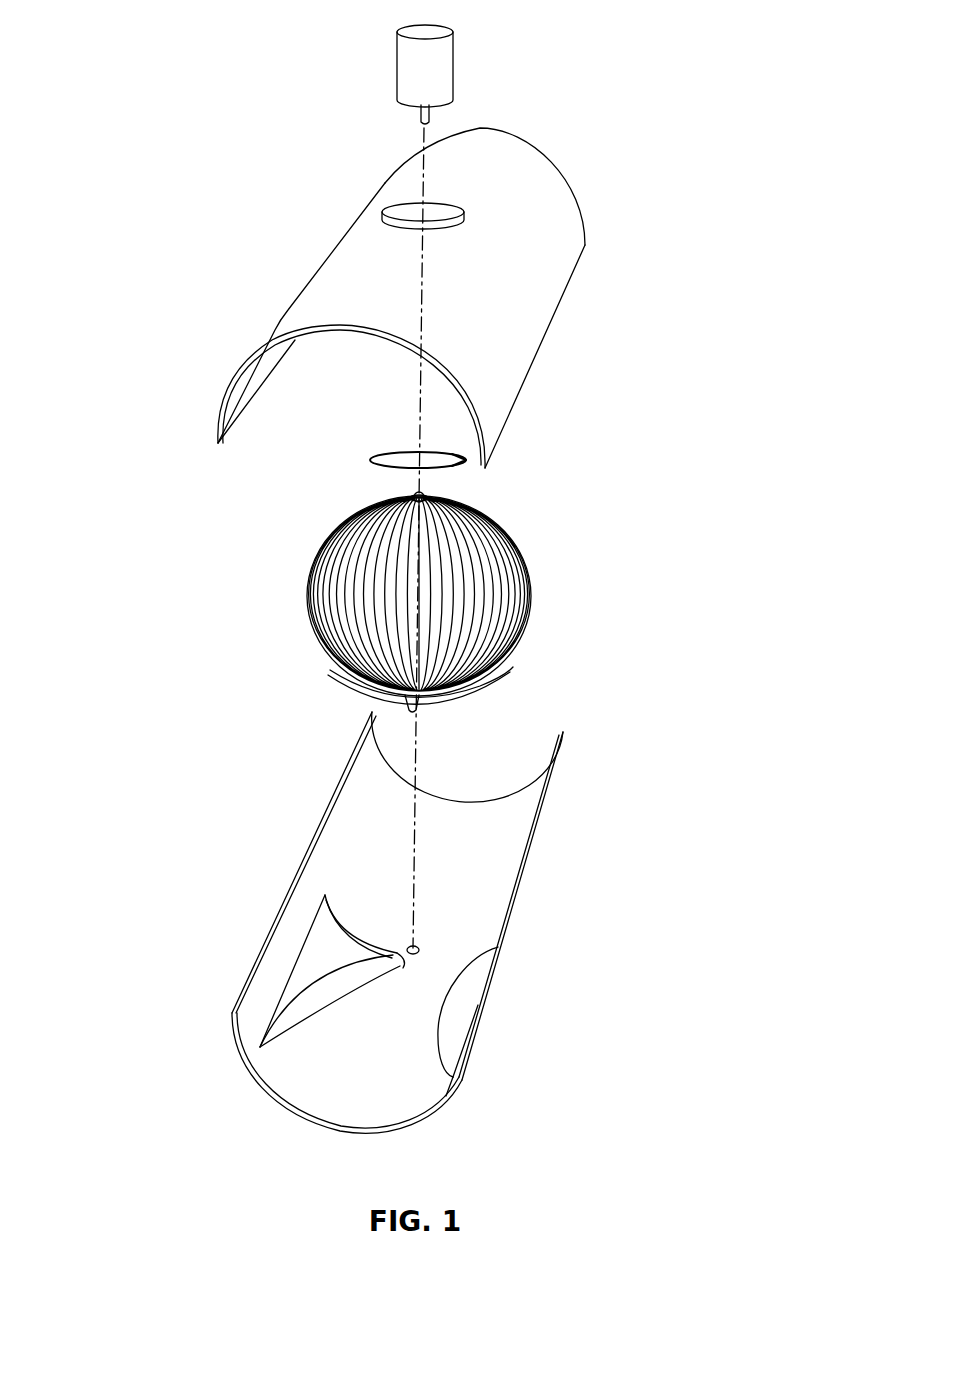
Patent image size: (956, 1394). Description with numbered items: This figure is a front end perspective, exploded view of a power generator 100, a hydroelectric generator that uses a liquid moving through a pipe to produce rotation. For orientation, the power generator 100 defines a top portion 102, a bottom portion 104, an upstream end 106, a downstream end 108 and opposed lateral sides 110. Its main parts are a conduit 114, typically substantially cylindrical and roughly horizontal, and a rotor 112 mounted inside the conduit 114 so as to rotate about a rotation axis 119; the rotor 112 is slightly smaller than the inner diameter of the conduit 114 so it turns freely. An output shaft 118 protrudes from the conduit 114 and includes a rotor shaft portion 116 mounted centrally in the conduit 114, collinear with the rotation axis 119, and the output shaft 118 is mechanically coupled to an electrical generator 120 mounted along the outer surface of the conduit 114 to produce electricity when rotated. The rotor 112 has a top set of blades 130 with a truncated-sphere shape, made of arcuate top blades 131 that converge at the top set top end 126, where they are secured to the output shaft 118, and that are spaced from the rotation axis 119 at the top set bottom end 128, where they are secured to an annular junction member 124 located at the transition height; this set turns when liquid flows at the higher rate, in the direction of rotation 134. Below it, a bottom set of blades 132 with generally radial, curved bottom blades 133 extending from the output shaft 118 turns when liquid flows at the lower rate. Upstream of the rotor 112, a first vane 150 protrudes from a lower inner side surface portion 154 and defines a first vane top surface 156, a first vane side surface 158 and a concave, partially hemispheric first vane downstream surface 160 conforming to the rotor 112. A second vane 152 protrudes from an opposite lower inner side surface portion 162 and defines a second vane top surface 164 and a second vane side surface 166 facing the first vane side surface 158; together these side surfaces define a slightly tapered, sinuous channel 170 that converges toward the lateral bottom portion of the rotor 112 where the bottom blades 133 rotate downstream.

The power generator 100 is at (186, 42).
The top portion 102 is at (528, 113).
The bottom portion 104 is at (219, 1110).
The upstream end 106 is at (340, 1103).
The downstream end 108 is at (463, 818).
The lateral sides 110 is at (523, 877).
The rotor 112 is at (526, 503).
The conduit 114 is at (591, 148).
The rotor shaft portion 116 is at (426, 497).
The output shaft 118 is at (419, 117).
The rotation axis 119 is at (427, 168).
The electrical generator 120 is at (415, 78).
The annular junction member 124 is at (502, 670).
The top set top end 126 is at (405, 498).
The top set bottom end 128 is at (330, 670).
The top set of blades 130 is at (531, 551).
The top blades 131 is at (327, 615).
The bottom set of blades 132 is at (485, 706).
The bottom blades 133 is at (352, 690).
The direction of rotation 134 is at (372, 465).
The first vane 150 is at (310, 951).
The second vane 152 is at (481, 1028).
The lower inner side surface portion 154 is at (267, 963).
The first vane top surface 156 is at (318, 977).
The first vane side surface 158 is at (335, 997).
The first vane downstream surface 160 is at (353, 930).
The lower inner side surface portion 162 is at (468, 1071).
The second vane top surface 164 is at (455, 1040).
The second vane side surface 166 is at (446, 1098).
The tapered channel 170 is at (403, 973).